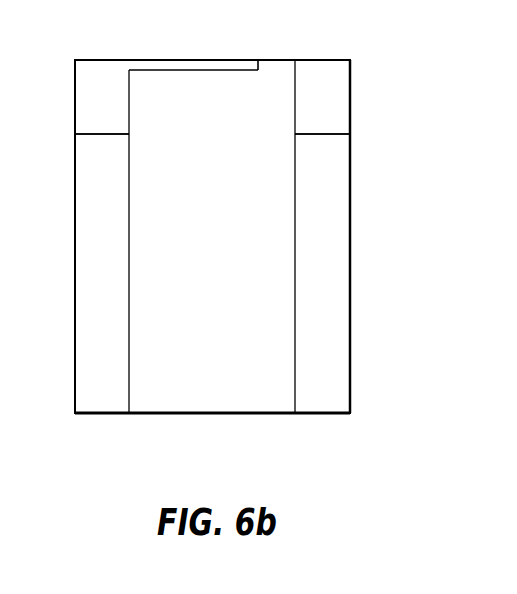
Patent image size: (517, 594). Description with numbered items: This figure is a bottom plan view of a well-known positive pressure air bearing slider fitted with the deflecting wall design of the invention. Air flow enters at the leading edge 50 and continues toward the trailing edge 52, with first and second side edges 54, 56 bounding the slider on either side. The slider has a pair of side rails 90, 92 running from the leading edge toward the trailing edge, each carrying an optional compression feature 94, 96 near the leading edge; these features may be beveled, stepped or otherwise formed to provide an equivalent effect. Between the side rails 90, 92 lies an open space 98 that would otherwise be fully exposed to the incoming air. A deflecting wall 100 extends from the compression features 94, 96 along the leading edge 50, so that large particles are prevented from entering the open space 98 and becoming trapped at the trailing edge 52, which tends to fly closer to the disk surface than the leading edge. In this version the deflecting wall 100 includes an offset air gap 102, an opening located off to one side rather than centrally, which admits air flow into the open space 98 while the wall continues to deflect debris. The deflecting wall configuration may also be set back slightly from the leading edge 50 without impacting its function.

The leading edge 50 is at (145, 60).
The trailing edge 52 is at (262, 414).
The first side edge 54 is at (75, 323).
The second side edge 56 is at (350, 322).
The side rail 90 is at (80, 218).
The side rail 92 is at (345, 233).
The compression feature 94 is at (80, 103).
The compression feature 96 is at (342, 111).
The open space 98 is at (225, 241).
The deflecting wall 100 is at (222, 63).
The offset air gap 102 is at (277, 62).